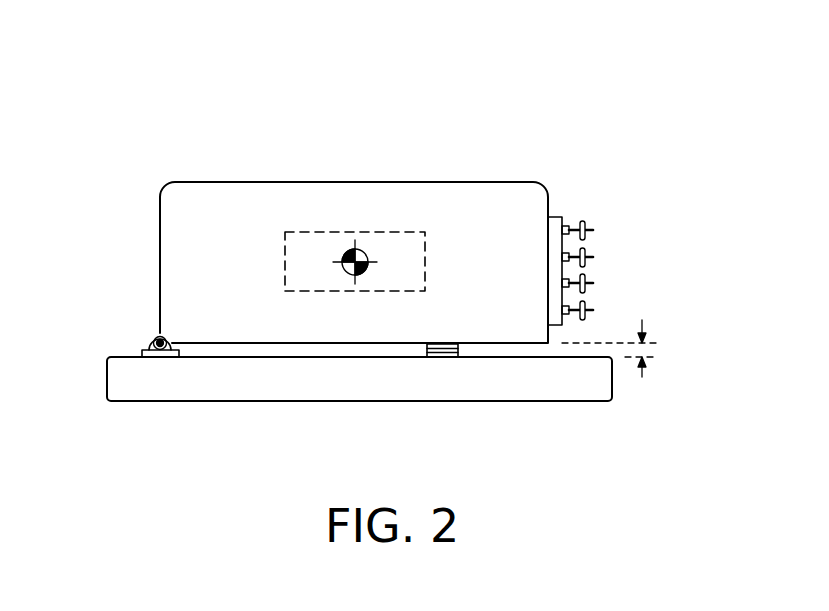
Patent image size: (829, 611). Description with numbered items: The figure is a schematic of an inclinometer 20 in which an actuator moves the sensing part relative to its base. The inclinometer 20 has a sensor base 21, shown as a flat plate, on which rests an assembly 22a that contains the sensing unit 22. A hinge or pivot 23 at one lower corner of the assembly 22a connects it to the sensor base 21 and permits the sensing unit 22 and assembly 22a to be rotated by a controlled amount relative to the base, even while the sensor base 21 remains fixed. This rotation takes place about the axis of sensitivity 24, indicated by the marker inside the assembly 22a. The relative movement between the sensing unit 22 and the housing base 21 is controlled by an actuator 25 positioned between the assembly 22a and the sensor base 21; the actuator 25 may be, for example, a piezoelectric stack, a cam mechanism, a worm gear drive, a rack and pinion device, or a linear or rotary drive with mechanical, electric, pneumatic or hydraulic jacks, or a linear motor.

The inclinometer 20 is at (686, 80).
The sensor base 21 is at (590, 380).
The sensing unit 22 is at (391, 232).
The assembly 22a is at (498, 197).
The hinge or pivot 23 is at (148, 340).
The axis of sensitivity 24 is at (350, 258).
The actuator 25 is at (454, 360).